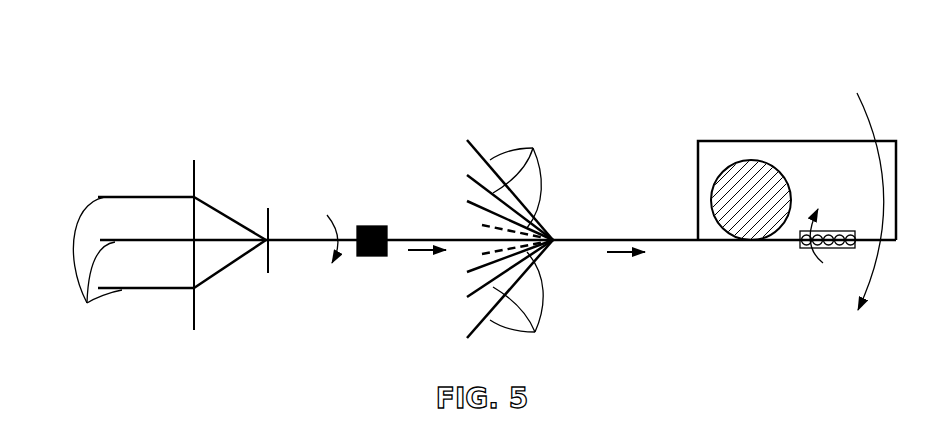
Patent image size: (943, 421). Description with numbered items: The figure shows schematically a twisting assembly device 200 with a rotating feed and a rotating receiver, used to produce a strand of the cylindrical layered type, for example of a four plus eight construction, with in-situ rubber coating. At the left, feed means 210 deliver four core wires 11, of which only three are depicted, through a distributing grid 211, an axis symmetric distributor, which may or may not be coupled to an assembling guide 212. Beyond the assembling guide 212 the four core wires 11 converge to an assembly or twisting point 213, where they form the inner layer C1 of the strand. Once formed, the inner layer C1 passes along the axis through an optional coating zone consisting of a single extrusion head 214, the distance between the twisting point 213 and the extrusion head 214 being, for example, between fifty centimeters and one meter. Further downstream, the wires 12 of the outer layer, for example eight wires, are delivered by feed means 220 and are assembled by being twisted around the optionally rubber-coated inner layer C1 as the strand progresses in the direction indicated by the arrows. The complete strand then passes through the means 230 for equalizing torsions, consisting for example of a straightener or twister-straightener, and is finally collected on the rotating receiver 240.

The twisting assembly device 200 is at (186, 91).
The feed means 210 is at (85, 203).
The core wires 11 is at (96, 264).
The distributing grid 211 is at (196, 165).
The assembling guide 212 is at (265, 255).
The twisting point 213 is at (272, 235).
The inner layer C1 is at (300, 243).
The extrusion head 214 is at (372, 258).
The feed means 220 is at (493, 138).
The wires of the outer layer 12 is at (531, 244).
The means for equalizing torsions 230 is at (832, 229).
The rotating receiver 240 is at (768, 263).